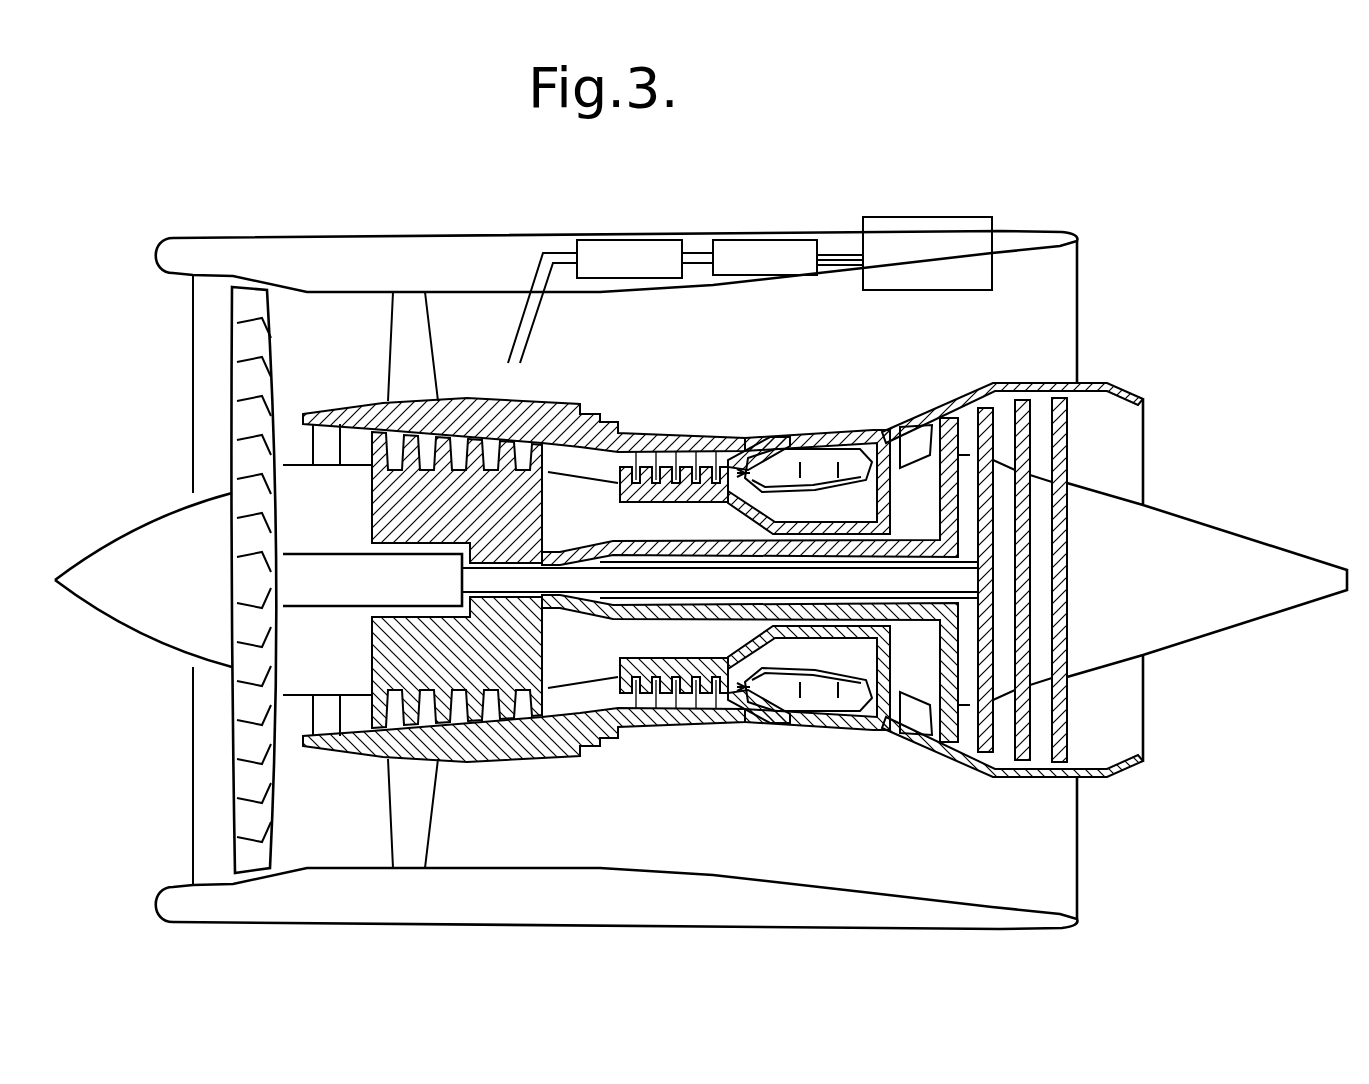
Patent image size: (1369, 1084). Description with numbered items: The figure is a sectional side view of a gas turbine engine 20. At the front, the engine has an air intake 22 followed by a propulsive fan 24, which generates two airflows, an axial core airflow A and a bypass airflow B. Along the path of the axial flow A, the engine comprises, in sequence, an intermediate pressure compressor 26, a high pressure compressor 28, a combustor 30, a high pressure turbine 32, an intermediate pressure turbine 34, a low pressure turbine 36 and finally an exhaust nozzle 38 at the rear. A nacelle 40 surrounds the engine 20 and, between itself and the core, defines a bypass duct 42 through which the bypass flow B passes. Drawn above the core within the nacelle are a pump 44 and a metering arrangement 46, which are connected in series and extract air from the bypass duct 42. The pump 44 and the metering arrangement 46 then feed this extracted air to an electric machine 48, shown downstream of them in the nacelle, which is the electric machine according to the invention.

The gas turbine engine 20 is at (1288, 493).
The air intake 22 is at (213, 406).
The propulsive fan 24 is at (252, 303).
The intermediate pressure compressor 26 is at (523, 515).
The high pressure compressor 28 is at (705, 470).
The combustor 30 is at (820, 467).
The high pressure turbine 32 is at (878, 432).
The intermediate pressure turbine 34 is at (950, 427).
The low pressure turbine 36 is at (1056, 405).
The exhaust nozzle 38 is at (1120, 453).
The nacelle 40 is at (423, 279).
The bypass duct 42 is at (738, 358).
The pump 44 is at (634, 240).
The metering arrangement 46 is at (764, 240).
The electric machine 48 is at (947, 217).
The axial airflow A is at (325, 444).
The bypass airflow B is at (327, 351).